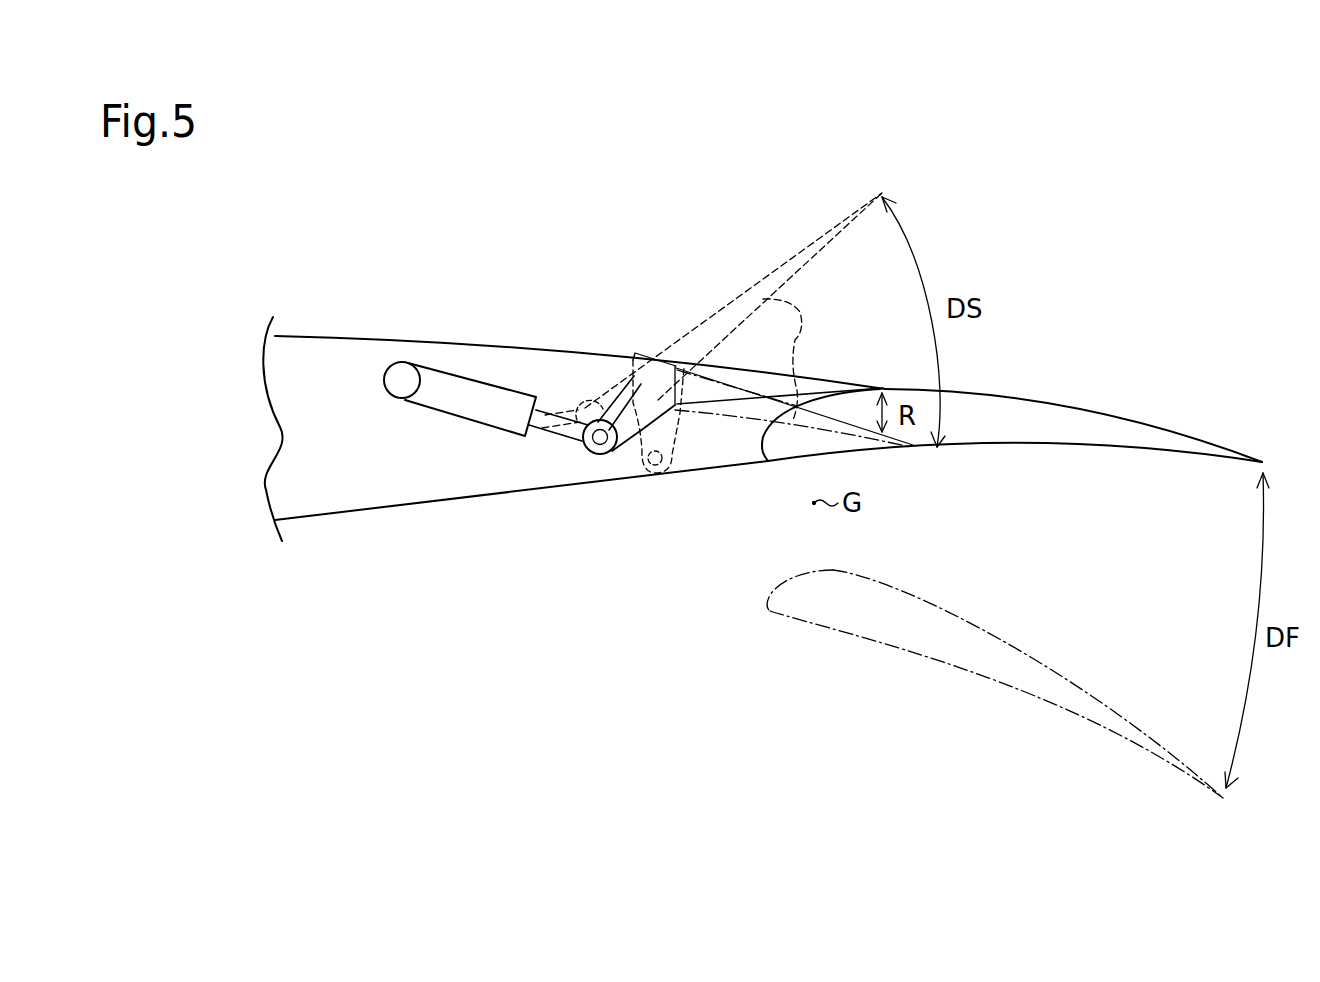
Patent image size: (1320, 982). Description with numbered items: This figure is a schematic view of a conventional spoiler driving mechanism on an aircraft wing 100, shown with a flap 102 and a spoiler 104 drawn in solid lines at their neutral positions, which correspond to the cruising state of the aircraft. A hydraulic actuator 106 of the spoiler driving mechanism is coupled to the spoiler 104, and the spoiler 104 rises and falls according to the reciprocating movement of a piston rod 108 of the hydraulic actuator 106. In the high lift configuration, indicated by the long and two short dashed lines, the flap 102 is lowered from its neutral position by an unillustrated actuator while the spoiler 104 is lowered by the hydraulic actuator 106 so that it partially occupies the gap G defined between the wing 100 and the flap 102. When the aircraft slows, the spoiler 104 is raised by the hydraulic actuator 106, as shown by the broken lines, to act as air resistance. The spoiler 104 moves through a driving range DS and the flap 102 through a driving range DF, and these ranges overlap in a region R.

The wing 100 is at (331, 303).
The flap 102 is at (1118, 418).
The spoiler 104 is at (750, 368).
The hydraulic actuator 106 is at (410, 406).
The piston rod 108 is at (552, 432).